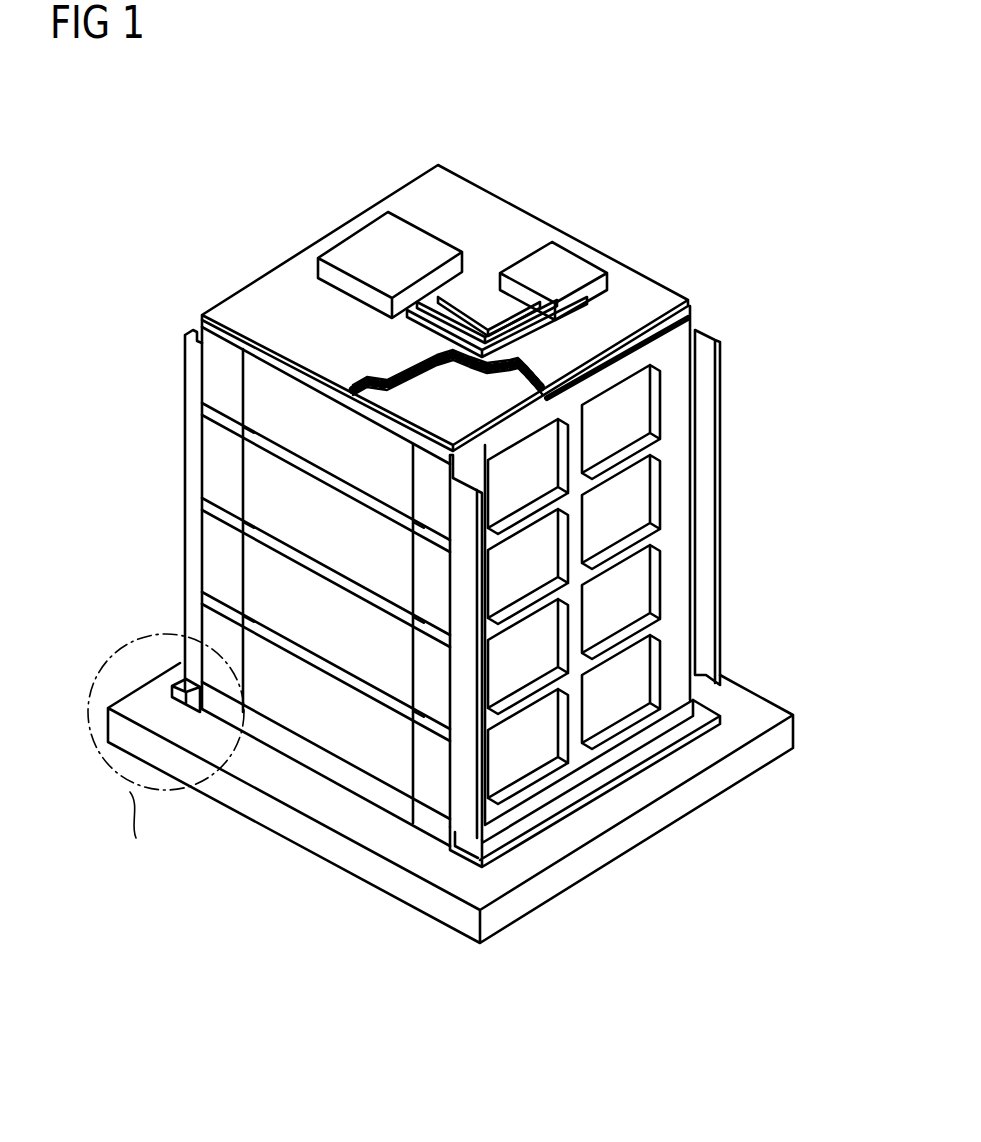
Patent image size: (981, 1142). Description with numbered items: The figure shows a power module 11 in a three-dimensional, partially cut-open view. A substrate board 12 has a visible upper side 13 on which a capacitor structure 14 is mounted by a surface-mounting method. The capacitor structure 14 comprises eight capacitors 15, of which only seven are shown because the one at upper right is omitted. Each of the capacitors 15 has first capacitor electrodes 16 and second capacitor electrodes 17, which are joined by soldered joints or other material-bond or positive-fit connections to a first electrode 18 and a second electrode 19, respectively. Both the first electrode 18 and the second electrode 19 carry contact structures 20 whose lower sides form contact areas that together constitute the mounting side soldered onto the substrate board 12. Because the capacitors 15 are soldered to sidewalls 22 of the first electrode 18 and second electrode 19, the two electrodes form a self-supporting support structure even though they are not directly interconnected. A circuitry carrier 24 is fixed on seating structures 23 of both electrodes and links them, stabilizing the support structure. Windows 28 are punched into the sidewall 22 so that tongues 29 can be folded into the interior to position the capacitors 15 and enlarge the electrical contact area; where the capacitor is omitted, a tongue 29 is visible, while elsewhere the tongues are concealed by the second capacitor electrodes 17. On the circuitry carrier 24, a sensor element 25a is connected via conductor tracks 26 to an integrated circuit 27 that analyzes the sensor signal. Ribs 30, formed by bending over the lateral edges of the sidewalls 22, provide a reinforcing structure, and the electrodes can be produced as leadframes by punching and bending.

The power module 11 is at (592, 102).
The substrate board 12 is at (720, 777).
The upper side 13 is at (760, 712).
The capacitor structure 14 is at (165, 509).
The capacitors 15 is at (340, 715).
The first capacitor electrodes 16 is at (222, 377).
The second capacitor electrodes 17 is at (427, 755).
The first electrode 18 is at (193, 300).
The second electrode 19 is at (712, 312).
The contact structures 20 is at (182, 683).
The sidewalls 22 is at (673, 472).
The seating structures 23 is at (473, 427).
The circuitry carrier 24 is at (460, 200).
The sensor element 25a is at (567, 268).
The conductor tracks 26 is at (477, 310).
The integrated circuit 27 is at (371, 247).
The windows 28 is at (632, 670).
The tongues 29 is at (640, 397).
The ribs 30 is at (190, 459).